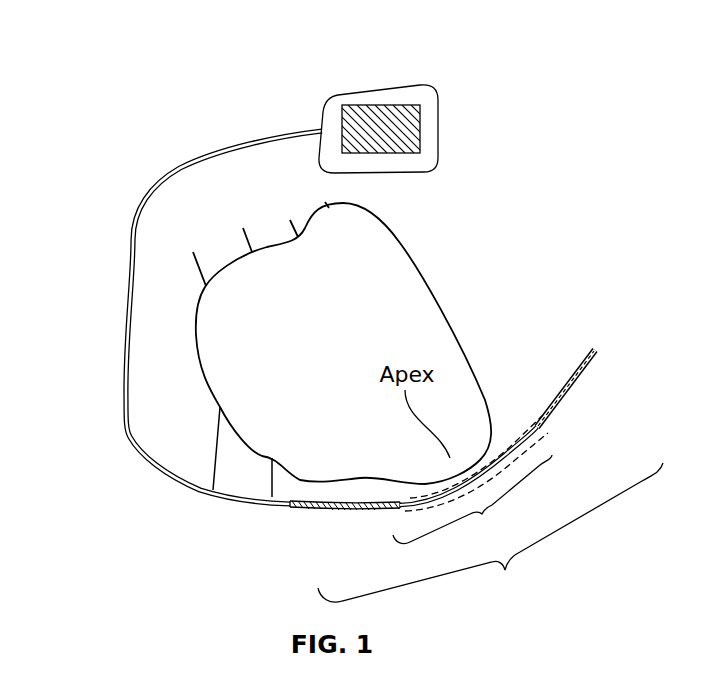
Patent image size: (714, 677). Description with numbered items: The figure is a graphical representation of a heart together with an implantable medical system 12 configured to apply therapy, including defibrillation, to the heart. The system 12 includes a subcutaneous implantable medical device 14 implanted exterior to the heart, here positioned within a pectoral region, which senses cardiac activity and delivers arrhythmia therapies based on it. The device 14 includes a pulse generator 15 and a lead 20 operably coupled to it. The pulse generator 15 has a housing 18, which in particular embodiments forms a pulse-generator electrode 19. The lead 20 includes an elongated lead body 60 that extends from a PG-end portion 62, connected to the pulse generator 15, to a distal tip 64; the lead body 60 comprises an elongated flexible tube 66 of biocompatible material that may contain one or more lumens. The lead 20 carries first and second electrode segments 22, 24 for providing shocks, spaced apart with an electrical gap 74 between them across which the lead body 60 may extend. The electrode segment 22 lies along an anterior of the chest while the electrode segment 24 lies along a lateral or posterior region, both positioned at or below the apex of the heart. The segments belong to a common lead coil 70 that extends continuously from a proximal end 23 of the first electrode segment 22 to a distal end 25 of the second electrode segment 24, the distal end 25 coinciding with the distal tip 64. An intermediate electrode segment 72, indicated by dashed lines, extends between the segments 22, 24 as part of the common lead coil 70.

The implantable medical system 12 is at (90, 66).
The subcutaneous implantable medical device 14 is at (404, 101).
The pulse generator 15 is at (398, 84).
The housing 18 is at (364, 98).
The pulse-generator electrode 19 is at (420, 147).
The lead 20 is at (160, 162).
The first electrode segment 22 is at (362, 500).
The proximal end 23 is at (276, 510).
The second electrode segment 24 is at (577, 386).
The distal end 25 is at (588, 341).
The elongated lead body 60 is at (131, 230).
The PG-end portion 62 is at (311, 121).
The distal tip 64 is at (610, 349).
The flexible tube 66 is at (131, 268).
The common lead coil 70 is at (490, 532).
The intermediate electrode segment 72 is at (497, 463).
The electrical gap 74 is at (472, 500).